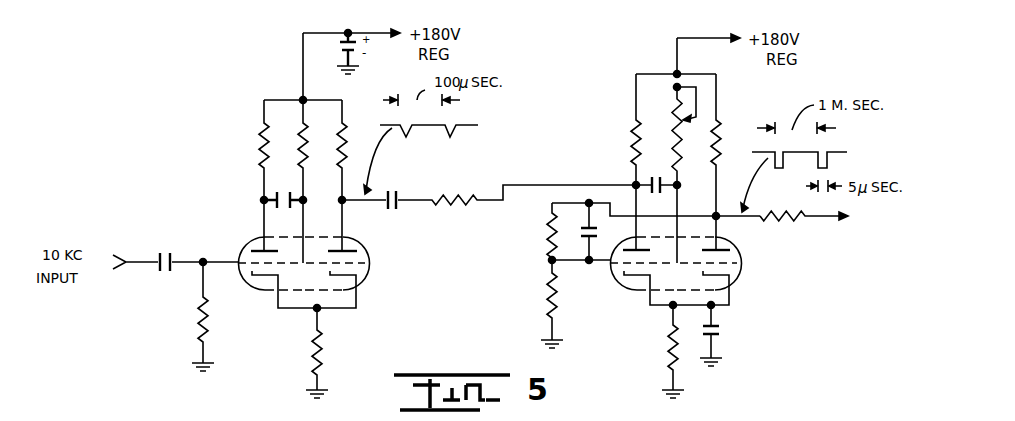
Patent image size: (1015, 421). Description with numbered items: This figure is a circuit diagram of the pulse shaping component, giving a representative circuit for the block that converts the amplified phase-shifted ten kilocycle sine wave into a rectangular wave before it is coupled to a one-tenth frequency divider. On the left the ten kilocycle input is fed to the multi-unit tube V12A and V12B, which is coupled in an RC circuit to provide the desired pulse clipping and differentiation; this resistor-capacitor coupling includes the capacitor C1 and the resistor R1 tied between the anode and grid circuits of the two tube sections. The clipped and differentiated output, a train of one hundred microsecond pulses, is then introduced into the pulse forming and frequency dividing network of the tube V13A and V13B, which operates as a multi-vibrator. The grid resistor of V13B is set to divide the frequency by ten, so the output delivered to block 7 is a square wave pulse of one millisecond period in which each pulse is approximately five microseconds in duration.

The capacitor C1 is at (283, 186).
The resistor R1 is at (315, 150).
The multi-unit tube section V12A is at (265, 272).
The multi-unit tube section V12B is at (357, 272).
The multi-unit tube section V13A is at (634, 272).
The multi-unit tube section V13B is at (730, 272).
The block 7 is at (854, 217).